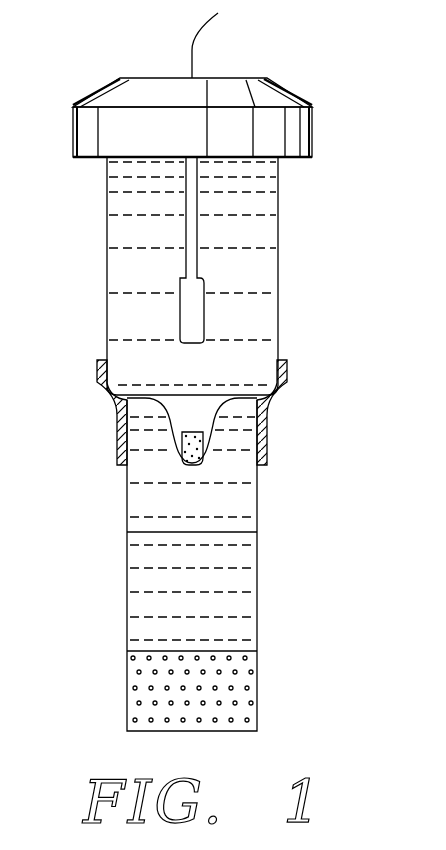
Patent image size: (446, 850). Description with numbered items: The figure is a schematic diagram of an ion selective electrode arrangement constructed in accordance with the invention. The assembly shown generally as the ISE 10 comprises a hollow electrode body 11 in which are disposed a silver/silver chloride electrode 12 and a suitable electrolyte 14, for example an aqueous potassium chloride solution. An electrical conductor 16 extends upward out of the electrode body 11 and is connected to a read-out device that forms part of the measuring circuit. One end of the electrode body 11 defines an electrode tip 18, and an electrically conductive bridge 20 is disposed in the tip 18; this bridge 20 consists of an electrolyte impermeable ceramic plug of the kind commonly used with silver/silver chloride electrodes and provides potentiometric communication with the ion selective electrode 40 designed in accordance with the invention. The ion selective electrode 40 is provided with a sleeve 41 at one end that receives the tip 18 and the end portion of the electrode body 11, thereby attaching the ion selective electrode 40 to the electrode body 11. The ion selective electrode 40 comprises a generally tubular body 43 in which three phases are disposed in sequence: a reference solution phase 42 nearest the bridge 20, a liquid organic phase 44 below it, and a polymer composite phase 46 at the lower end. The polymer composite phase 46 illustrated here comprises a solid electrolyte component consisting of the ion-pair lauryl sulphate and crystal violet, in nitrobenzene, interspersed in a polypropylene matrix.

The ISE 10 is at (298, 240).
The electrode body 11 is at (107, 204).
The silver/silver chloride electrode 12 is at (202, 305).
The electrolyte 14 is at (260, 208).
The electrical conductor 16 is at (193, 40).
The electrode tip 18 is at (177, 453).
The electrically conductive bridge 20 is at (190, 430).
The ion selective electrode 40 is at (270, 582).
The sleeve 41 is at (117, 430).
The reference solution phase 42 is at (242, 497).
The tubular body 43 is at (127, 580).
The liquid organic phase 44 is at (248, 628).
The polymer composite phase 46 is at (248, 710).